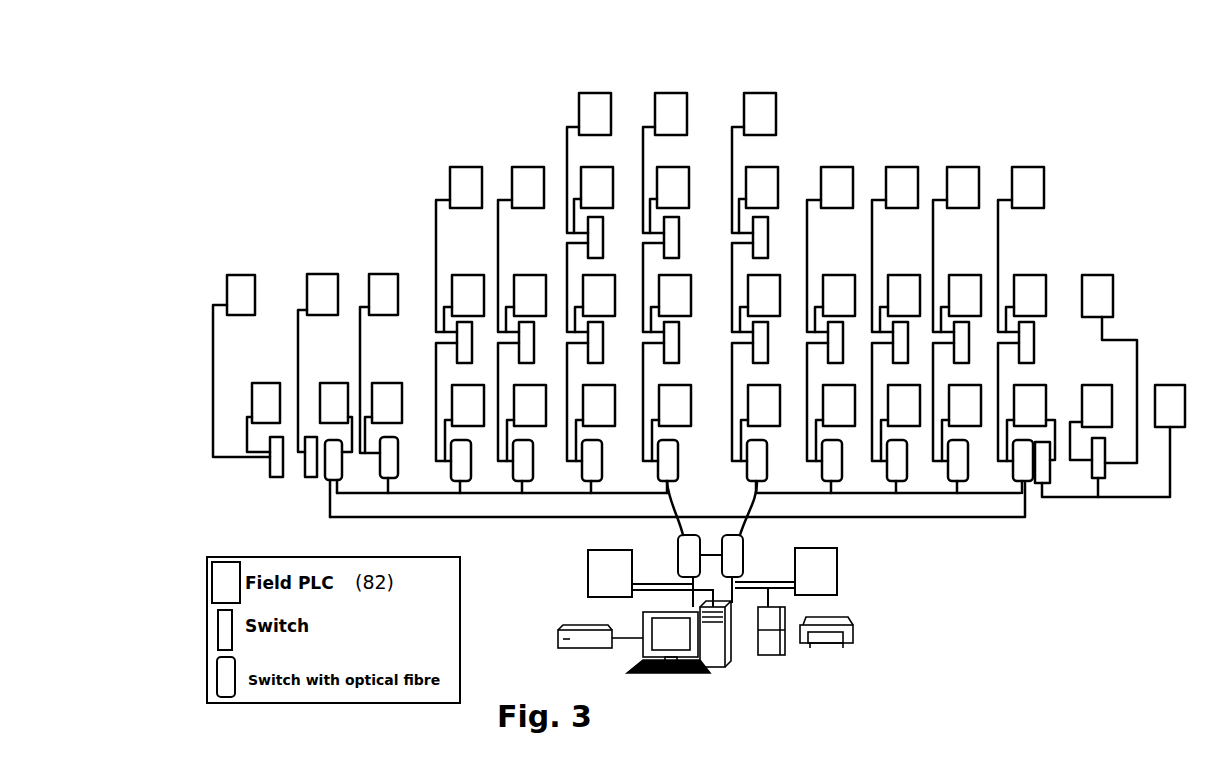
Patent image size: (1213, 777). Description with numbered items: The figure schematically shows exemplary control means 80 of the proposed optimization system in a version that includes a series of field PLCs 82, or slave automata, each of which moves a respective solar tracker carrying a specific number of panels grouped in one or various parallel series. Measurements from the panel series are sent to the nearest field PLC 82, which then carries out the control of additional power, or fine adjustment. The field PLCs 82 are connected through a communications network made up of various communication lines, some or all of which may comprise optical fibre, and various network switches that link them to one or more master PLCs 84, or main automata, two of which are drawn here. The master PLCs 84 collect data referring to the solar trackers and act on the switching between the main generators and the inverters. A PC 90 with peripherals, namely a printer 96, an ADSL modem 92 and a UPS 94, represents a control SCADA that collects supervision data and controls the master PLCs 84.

The control means 80 is at (946, 58).
The field PLC 82 is at (243, 277).
The master PLC 84 is at (590, 568).
The workstation computer 90 is at (700, 676).
The ADSL modem 92 is at (558, 630).
The UPS 94 is at (785, 655).
The printer 96 is at (853, 635).